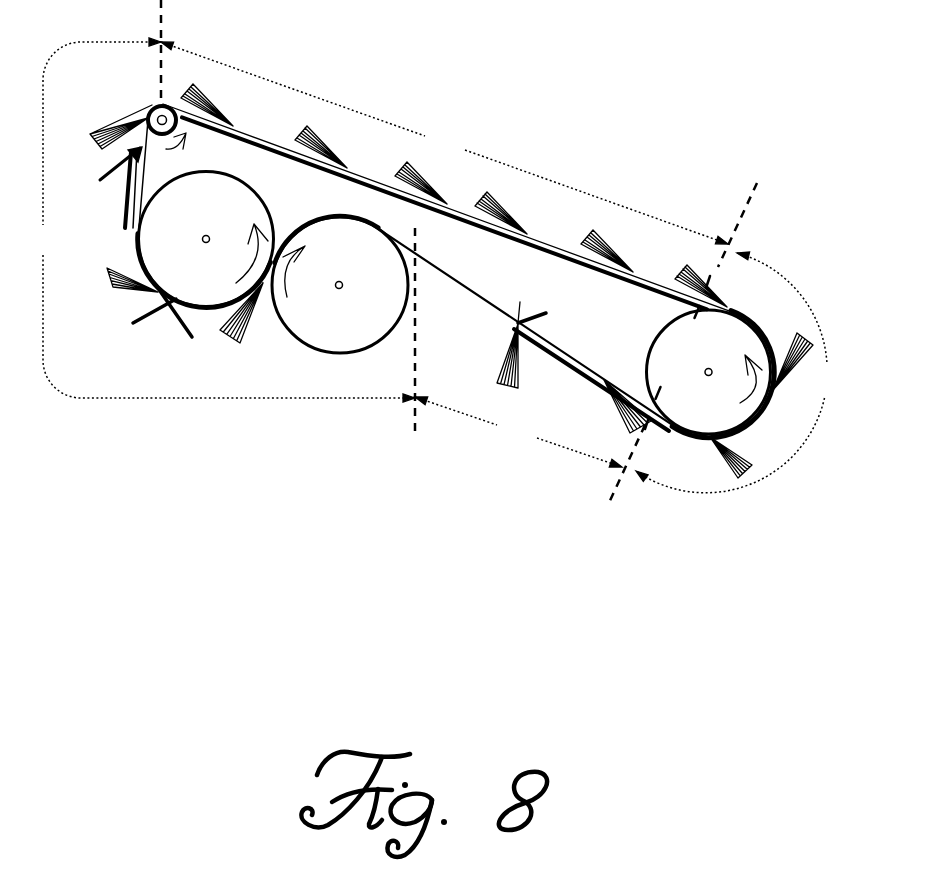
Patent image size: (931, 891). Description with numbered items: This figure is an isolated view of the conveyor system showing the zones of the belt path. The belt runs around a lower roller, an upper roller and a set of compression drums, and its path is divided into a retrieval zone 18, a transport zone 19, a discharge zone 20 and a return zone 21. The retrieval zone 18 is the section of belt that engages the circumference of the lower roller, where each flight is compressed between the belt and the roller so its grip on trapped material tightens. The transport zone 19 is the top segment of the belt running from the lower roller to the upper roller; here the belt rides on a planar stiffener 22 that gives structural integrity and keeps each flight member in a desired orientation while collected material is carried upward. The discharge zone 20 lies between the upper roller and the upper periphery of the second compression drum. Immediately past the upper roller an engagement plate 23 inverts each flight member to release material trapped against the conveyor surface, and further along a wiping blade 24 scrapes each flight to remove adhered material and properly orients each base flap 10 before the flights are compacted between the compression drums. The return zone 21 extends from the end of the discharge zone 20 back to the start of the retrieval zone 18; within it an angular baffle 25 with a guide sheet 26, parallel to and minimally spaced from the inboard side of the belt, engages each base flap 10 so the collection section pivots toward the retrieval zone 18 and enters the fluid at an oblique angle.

The base flap 10 is at (510, 306).
The retrieval zone 18 is at (738, 372).
The transport zone 19 is at (444, 143).
The discharge zone 20 is at (221, 220).
The return zone 21 is at (518, 432).
The planar stiffener 22 is at (640, 283).
The engagement plate 23 is at (123, 192).
The wiping blade 24 is at (166, 324).
The angular baffle 25 is at (532, 308).
The guide sheet 26 is at (568, 343).